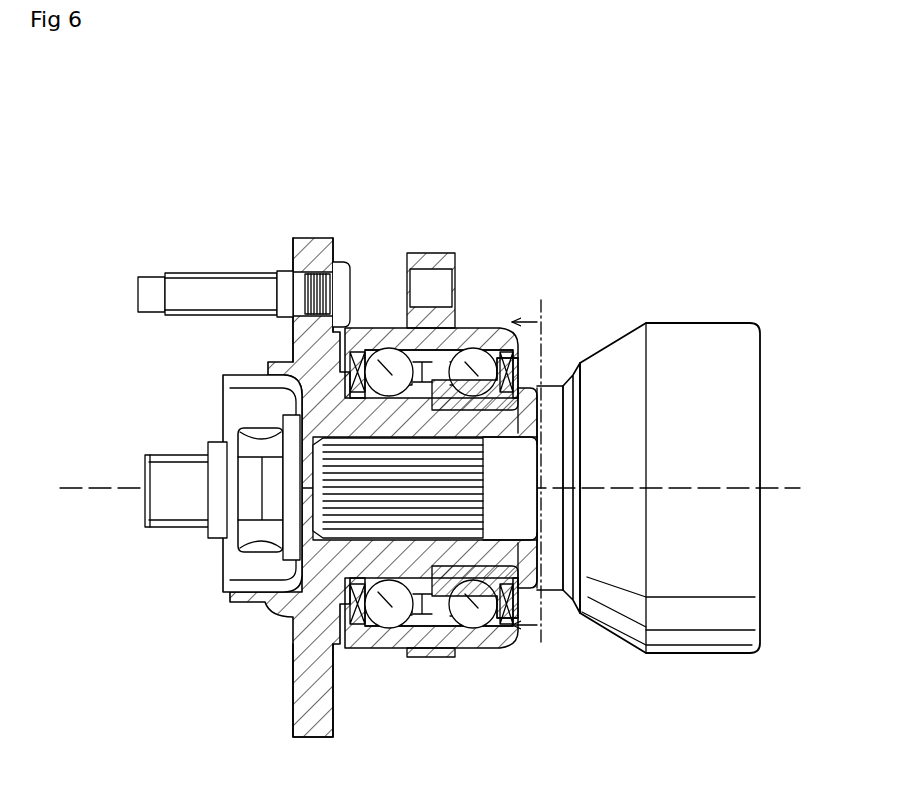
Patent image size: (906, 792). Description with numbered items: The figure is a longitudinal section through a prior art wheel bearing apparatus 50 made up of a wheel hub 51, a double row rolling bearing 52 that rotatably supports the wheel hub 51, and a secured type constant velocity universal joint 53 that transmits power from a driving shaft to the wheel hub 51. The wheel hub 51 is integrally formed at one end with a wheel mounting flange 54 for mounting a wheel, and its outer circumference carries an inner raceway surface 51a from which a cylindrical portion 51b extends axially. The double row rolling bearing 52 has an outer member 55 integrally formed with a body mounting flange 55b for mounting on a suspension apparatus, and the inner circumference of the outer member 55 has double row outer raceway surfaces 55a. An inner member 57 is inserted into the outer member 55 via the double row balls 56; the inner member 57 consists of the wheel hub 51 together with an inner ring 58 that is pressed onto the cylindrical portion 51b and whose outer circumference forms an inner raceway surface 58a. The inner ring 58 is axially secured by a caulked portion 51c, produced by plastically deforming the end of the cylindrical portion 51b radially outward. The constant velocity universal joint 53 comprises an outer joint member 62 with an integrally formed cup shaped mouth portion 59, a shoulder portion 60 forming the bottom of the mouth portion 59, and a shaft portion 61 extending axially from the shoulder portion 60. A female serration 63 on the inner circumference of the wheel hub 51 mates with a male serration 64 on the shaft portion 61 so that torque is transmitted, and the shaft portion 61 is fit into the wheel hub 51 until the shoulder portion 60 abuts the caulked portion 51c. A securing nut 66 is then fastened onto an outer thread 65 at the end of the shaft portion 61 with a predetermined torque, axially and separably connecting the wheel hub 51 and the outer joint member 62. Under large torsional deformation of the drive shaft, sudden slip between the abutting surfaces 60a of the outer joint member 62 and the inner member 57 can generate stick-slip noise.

The wheel bearing apparatus 50 is at (211, 243).
The wheel hub 51 is at (322, 372).
The inner raceway surface 51a is at (298, 394).
The cylindrical portion 51b is at (563, 436).
The caulked portion 51c is at (528, 340).
The double row rolling bearing 52 is at (509, 284).
The secured type constant velocity universal joint 53 is at (706, 314).
The wheel mounting flange 54 is at (312, 239).
The outer member 55 is at (437, 650).
The outer raceway surfaces 55a is at (390, 345).
The body mounting flange 55b is at (432, 262).
The balls 56 is at (392, 606).
The inner member 57 is at (286, 574).
The inner ring 58 is at (521, 596).
The inner raceway surface 58a is at (498, 617).
The mouth portion 59 is at (712, 640).
The shoulder portion 60 is at (582, 342).
The abutting surfaces 60a is at (560, 346).
The shaft portion 61 is at (510, 480).
The outer joint member 62 is at (651, 660).
The female serration 63 is at (285, 433).
The male serration 64 is at (287, 497).
The outer thread 65 is at (158, 515).
The securing nut 66 is at (252, 477).